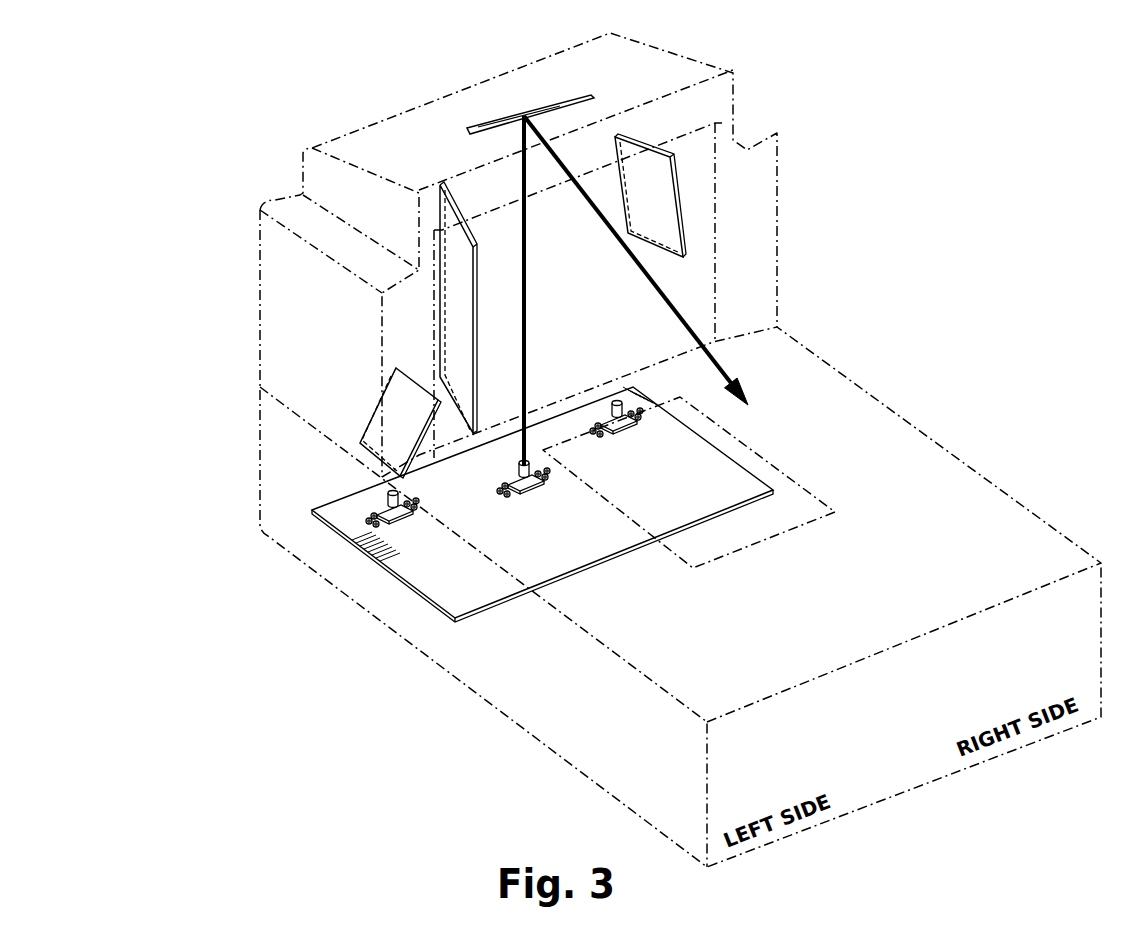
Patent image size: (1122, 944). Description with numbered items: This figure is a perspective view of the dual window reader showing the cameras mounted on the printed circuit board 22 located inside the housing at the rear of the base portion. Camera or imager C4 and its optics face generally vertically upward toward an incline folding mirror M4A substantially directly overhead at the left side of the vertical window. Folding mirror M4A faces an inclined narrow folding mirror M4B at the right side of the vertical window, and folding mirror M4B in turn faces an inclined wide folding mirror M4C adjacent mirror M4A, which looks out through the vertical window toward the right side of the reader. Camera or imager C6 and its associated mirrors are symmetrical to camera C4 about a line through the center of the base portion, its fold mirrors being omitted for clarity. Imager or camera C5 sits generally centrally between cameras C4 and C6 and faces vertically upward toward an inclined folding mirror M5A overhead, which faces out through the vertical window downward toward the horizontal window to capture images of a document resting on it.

The inclined folding mirror M5A is at (535, 110).
The incline folding mirror M4A is at (392, 402).
The inclined narrow folding mirror M4B is at (657, 183).
The inclined wide folding mirror M4C is at (452, 297).
The camera or imager C4 is at (393, 520).
The imager or camera C5 is at (533, 488).
The camera or imager C6 is at (622, 428).
The printed circuit board 22 is at (617, 540).